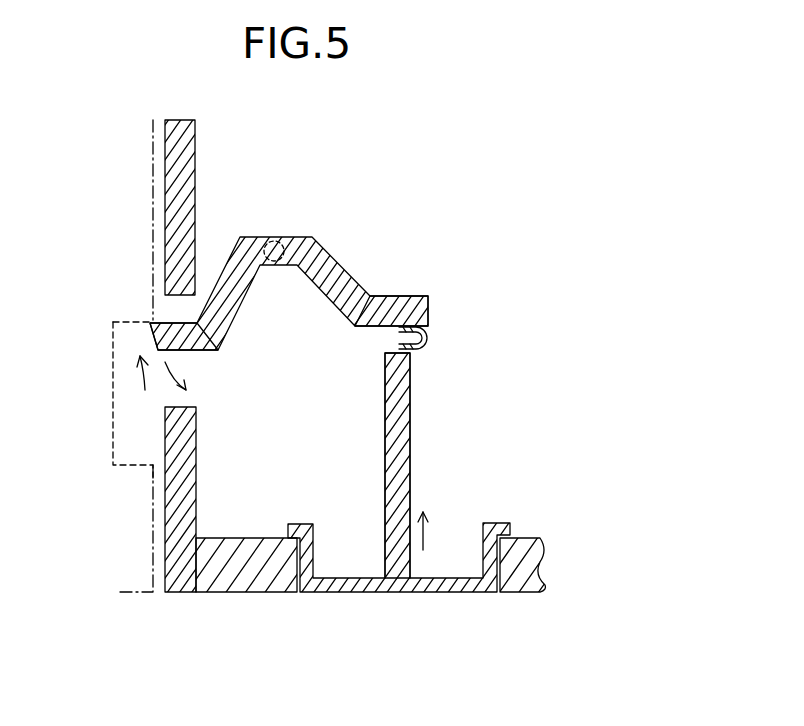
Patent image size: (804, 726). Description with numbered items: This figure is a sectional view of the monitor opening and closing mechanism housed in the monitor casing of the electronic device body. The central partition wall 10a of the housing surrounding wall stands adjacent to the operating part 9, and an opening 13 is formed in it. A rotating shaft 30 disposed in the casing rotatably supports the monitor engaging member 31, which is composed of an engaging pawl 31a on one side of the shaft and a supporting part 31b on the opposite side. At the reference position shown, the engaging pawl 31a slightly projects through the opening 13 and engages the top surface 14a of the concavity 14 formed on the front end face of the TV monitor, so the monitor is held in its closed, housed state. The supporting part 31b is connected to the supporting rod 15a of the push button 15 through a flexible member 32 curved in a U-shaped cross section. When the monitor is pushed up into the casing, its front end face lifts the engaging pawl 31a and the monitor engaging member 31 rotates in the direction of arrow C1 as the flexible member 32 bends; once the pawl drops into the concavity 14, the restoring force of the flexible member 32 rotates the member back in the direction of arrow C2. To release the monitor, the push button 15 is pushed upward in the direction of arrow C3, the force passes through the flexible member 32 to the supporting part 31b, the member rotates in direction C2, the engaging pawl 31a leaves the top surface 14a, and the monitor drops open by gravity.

The central partition wall 10a is at (190, 148).
The opening 13 is at (189, 297).
The concavity 14 is at (128, 445).
The top surface of the concavity 14a is at (113, 323).
The push button 15 is at (355, 592).
The supporting rod 15a is at (411, 444).
The rotating shaft 30 is at (278, 240).
The monitor engaging member 31 is at (344, 270).
The engaging pawl 31a is at (148, 338).
The supporting part 31b is at (429, 310).
The flexible member 32 is at (430, 339).
The operating part 9 is at (230, 580).
The arrow C1 is at (142, 390).
The arrow C2 is at (176, 370).
The arrow C3 is at (424, 535).